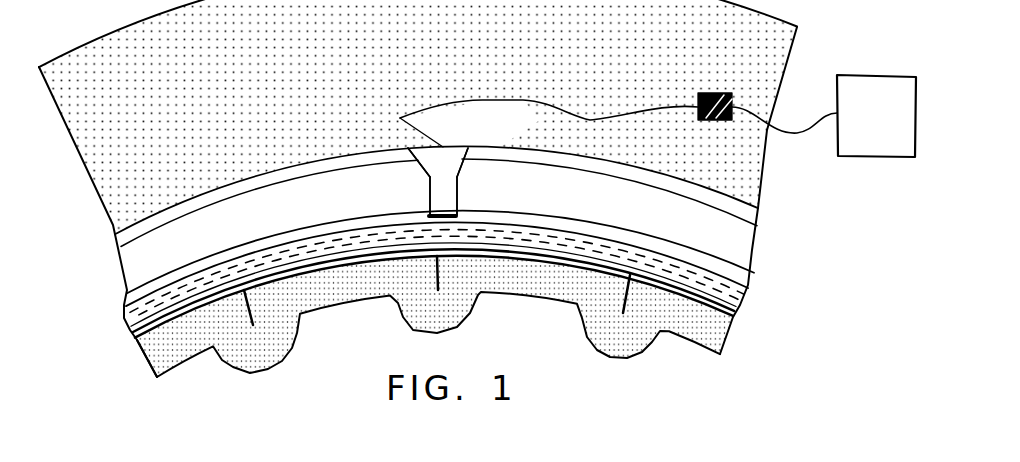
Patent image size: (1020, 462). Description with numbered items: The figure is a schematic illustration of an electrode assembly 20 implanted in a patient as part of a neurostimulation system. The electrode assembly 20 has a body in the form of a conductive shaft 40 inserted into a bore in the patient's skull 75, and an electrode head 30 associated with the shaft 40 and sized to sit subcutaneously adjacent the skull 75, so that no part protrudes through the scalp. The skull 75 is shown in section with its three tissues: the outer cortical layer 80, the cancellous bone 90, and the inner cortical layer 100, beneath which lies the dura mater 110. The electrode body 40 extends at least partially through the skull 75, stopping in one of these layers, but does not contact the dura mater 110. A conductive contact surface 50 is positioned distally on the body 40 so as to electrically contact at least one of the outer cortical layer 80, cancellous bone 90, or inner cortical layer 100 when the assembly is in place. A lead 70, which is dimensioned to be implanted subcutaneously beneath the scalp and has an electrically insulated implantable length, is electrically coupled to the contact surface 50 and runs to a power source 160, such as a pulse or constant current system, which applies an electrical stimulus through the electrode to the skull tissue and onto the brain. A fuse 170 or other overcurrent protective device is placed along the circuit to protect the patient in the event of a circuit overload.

The electrode assembly 20 is at (440, 163).
The electrode head 30 is at (447, 160).
The conductive shaft/electrode body 40 is at (445, 195).
The conductive contact surface 50 is at (447, 211).
The lead 70 is at (640, 110).
The skull 75 is at (435, 244).
The outer cortical layer 80 is at (123, 240).
The cancellous bone 90 is at (133, 260).
The inner cortical layer 100 is at (137, 300).
The dura mater 110 is at (728, 297).
The power source 160 is at (876, 116).
The fuse 170 is at (713, 95).